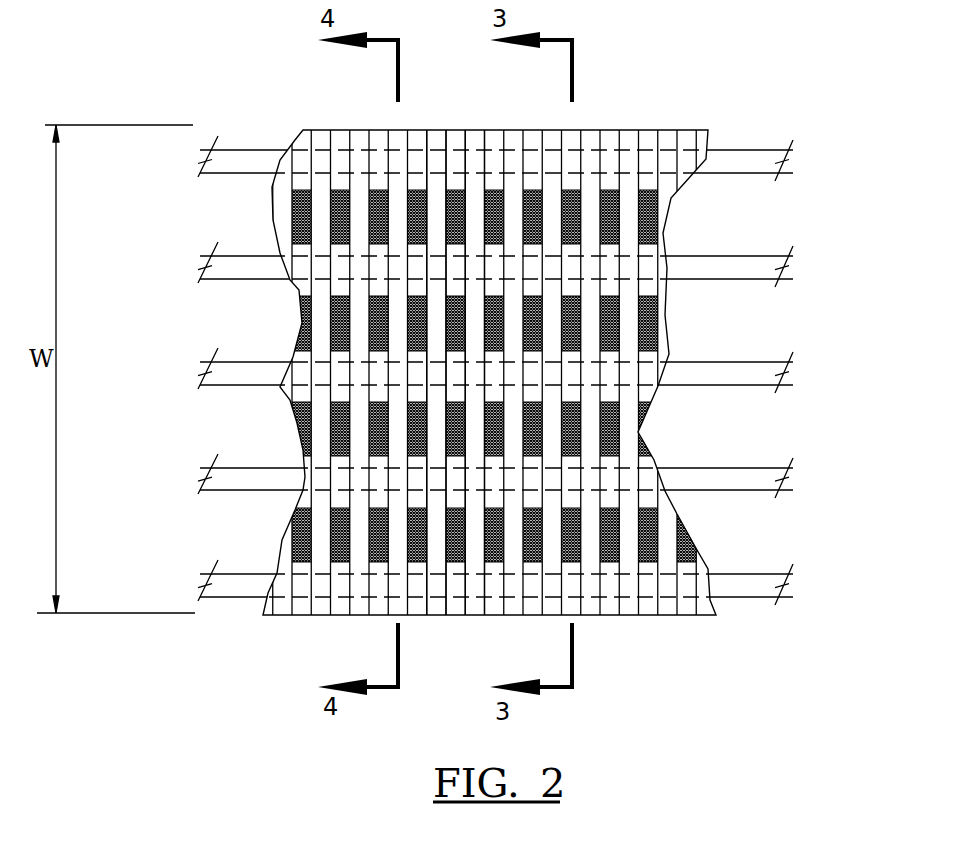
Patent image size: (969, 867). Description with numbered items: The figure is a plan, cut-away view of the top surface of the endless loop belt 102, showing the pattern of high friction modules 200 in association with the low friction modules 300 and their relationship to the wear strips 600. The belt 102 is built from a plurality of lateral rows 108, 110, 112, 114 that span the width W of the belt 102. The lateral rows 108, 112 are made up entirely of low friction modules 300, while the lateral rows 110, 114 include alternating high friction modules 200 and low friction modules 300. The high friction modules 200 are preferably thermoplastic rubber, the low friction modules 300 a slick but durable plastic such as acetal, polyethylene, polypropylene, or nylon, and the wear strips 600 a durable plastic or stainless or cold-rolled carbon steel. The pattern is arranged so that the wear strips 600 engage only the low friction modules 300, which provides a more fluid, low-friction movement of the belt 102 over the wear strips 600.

The endless loop belt 102 is at (667, 130).
The lateral row 108 is at (475, 130).
The lateral row 110 is at (457, 130).
The lateral row 112 is at (437, 130).
The lateral row 114 is at (417, 130).
The high friction module 200 is at (663, 243).
The low friction module 300 is at (662, 530).
The wear strip 600 is at (243, 465).